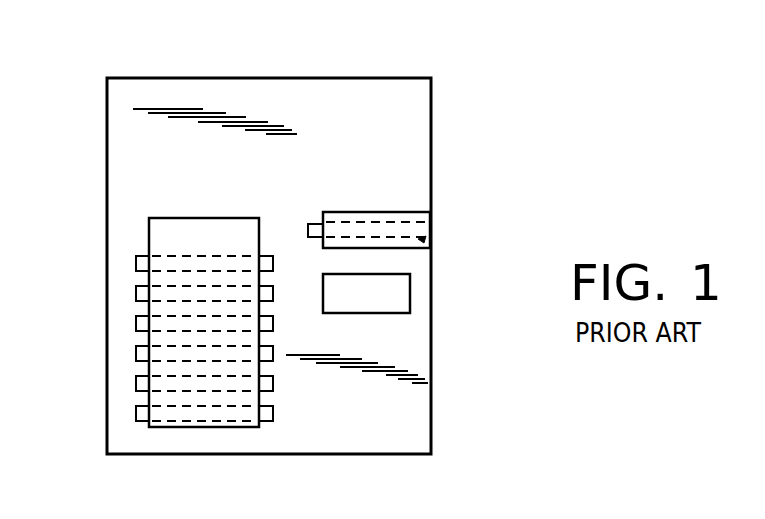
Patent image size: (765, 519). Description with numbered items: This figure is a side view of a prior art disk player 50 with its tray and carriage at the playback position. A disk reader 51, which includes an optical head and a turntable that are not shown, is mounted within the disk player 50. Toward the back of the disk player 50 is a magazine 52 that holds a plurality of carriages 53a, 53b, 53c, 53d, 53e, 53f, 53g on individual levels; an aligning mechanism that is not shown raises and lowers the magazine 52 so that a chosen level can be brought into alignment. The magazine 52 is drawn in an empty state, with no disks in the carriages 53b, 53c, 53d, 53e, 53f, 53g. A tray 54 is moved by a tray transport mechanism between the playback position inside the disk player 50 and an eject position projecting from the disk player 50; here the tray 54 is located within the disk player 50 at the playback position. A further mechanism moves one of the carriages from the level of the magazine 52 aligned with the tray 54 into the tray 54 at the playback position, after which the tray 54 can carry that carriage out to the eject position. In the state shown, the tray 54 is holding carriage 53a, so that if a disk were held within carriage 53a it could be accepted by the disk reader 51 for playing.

The disk player 50 is at (320, 52).
The disk reader 51 is at (410, 283).
The magazine 52 is at (180, 218).
The carriage 53a is at (420, 240).
The carriage 53b is at (136, 263).
The carriage 53c is at (136, 293).
The carriage 53d is at (136, 323).
The carriage 53e is at (136, 353).
The carriage 53f is at (136, 383).
The carriage 53g is at (136, 413).
The tray 54 is at (344, 212).